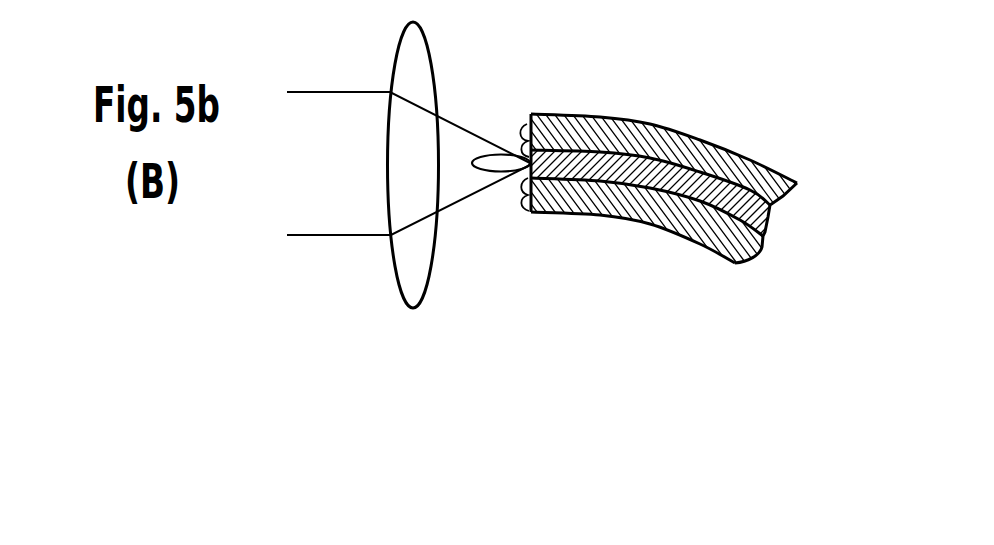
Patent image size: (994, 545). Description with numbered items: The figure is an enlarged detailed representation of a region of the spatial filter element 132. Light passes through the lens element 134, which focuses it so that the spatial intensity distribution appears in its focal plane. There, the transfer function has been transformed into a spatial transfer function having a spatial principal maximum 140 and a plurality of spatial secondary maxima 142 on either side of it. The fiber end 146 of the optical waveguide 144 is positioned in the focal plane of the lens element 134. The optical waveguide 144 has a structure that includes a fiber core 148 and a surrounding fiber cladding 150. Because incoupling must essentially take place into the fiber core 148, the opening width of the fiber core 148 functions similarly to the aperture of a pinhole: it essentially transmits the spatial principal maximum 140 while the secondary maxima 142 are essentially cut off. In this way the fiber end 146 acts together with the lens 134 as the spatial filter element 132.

The spatial filter element 132 is at (331, 340).
The lens element 134 is at (393, 63).
The spatial principal maximum 140 is at (482, 163).
The spatial secondary maxima 142 is at (524, 199).
The optical waveguide 144 is at (683, 183).
The fiber end 146 is at (527, 124).
The fiber core 148 is at (603, 160).
The fiber cladding 150 is at (683, 142).